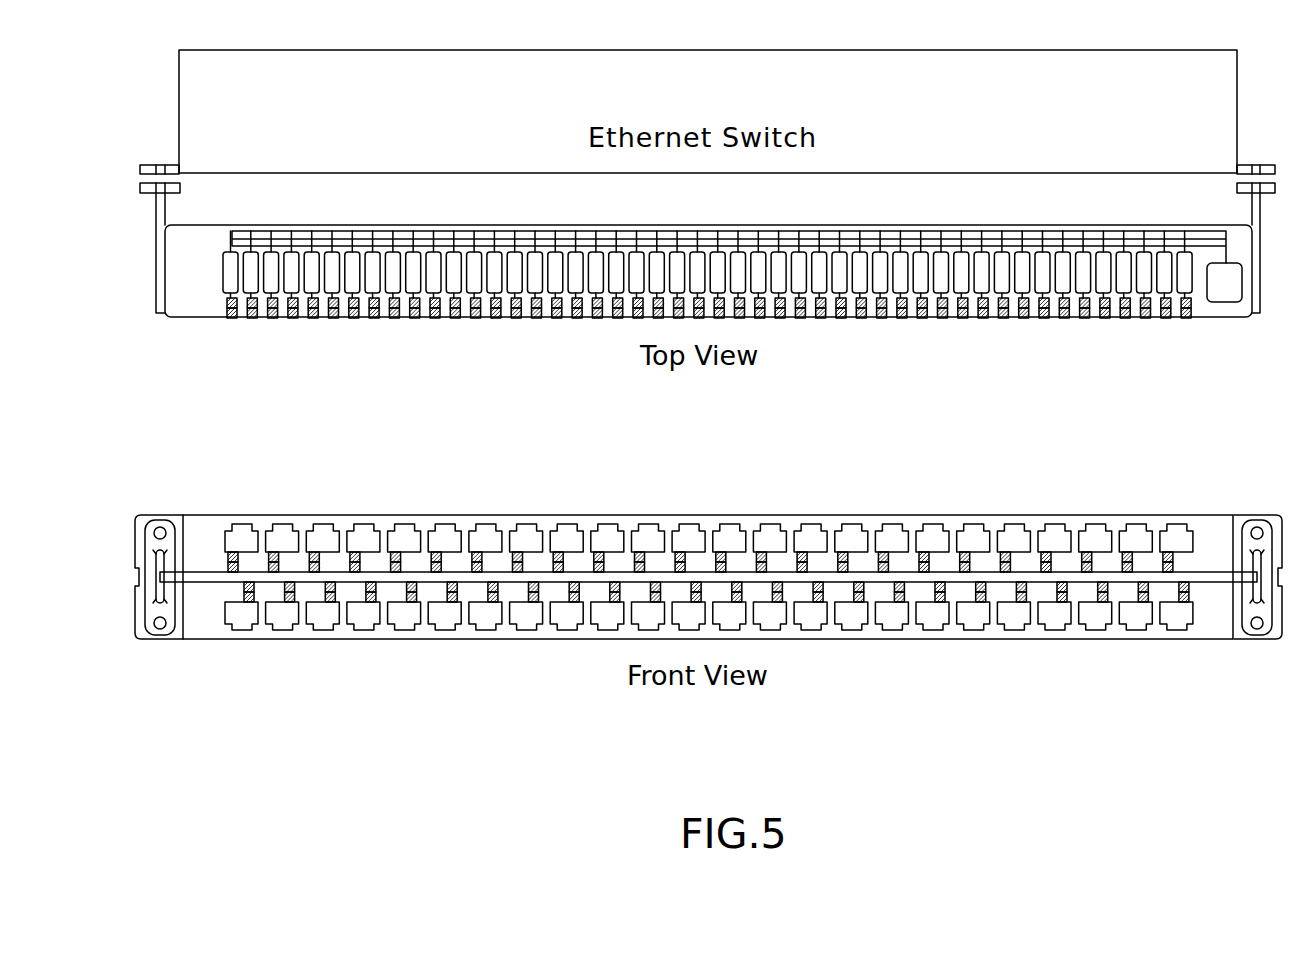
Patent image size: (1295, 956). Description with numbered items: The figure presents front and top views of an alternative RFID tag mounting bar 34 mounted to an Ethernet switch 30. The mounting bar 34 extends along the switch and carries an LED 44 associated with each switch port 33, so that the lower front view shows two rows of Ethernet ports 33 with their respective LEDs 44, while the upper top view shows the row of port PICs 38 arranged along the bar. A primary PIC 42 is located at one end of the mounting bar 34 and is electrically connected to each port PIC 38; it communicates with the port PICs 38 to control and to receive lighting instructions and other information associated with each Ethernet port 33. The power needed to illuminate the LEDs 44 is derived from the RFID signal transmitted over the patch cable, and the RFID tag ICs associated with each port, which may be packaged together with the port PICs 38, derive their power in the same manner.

The Ethernet switch 30 is at (200, 533).
The switch port 33 is at (242, 630).
The mounting bar 34 is at (166, 275).
The port PIC 38 is at (497, 285).
The primary PIC 42 is at (1224, 290).
The LED 44 is at (370, 317).